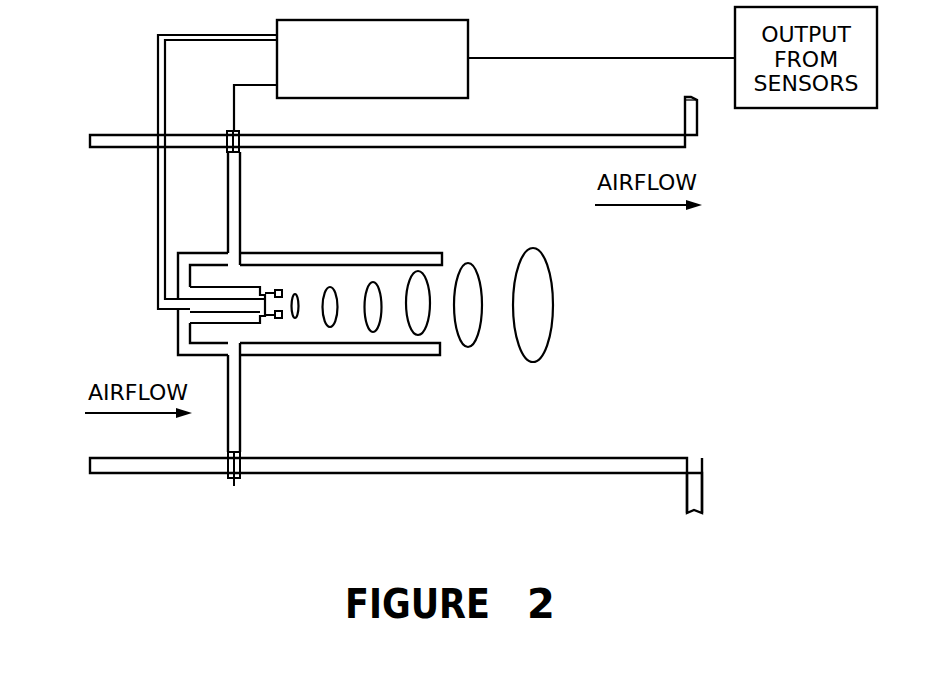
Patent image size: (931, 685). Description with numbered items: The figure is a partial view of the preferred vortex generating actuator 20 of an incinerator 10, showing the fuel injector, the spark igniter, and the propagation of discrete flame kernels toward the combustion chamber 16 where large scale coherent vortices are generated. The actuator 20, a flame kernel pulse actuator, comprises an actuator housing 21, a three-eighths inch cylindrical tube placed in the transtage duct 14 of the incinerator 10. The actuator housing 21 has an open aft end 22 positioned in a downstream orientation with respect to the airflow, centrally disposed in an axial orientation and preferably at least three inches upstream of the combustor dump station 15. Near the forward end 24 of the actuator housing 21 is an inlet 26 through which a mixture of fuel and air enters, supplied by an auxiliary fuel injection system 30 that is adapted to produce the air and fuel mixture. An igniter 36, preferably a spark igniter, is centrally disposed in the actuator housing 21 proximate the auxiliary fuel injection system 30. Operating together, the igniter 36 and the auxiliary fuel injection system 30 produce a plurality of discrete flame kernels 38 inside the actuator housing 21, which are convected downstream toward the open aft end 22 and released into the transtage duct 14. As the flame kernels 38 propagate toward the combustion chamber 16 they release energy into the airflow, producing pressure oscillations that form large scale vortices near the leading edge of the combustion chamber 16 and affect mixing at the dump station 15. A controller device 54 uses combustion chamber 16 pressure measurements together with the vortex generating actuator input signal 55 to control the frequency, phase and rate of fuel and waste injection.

The incinerator 10 is at (642, 495).
The transtage duct 14 is at (393, 142).
The dump station 15 is at (683, 458).
The combustion chamber 16 is at (732, 210).
The vortex generating actuator 20 is at (112, 253).
The actuator housing 21 is at (372, 252).
The open aft end 22 is at (447, 337).
The forward end 24 is at (178, 352).
The inlet 26 is at (240, 195).
The auxiliary fuel injection system 30 is at (228, 132).
The igniter 36 is at (250, 323).
The discrete flame kernels 38 is at (528, 248).
The controller device 54 is at (468, 75).
The vortex generating actuator input signal 55 is at (158, 90).